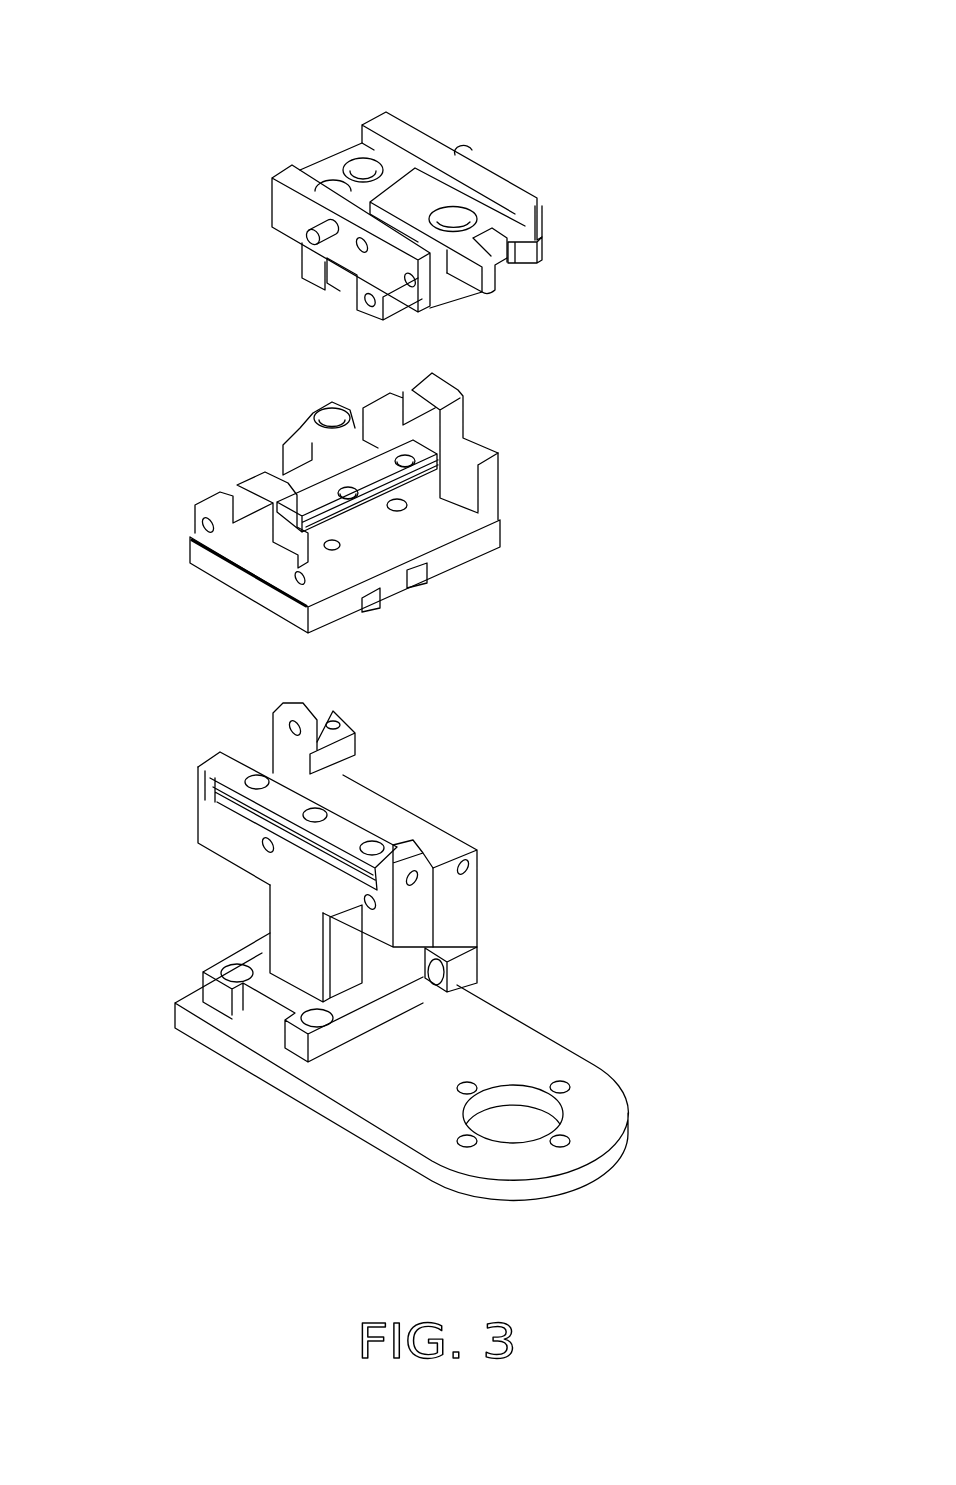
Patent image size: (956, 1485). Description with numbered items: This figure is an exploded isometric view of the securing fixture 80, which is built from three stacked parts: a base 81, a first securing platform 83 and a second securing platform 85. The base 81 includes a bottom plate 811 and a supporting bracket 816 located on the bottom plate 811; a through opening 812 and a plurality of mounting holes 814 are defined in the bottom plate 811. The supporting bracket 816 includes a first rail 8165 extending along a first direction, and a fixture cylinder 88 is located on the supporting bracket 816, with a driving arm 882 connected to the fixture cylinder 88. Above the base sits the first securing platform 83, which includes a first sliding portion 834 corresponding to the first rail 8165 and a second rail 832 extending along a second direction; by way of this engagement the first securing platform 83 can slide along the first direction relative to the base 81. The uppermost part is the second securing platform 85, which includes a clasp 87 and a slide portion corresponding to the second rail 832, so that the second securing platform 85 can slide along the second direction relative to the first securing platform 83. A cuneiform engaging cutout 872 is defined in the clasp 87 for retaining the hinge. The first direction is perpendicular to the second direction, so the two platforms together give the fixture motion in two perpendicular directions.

The securing fixture 80 is at (297, 78).
The second securing platform 85 is at (504, 323).
The clasp 87 is at (488, 217).
The cuneiform engaging cutout 872 is at (525, 255).
The first securing platform 83 is at (503, 557).
The second rail 832 is at (367, 483).
The first sliding portion 834 is at (413, 578).
The base 81 is at (508, 822).
The bottom plate 811 is at (520, 1050).
The through opening 812 is at (532, 1122).
The mounting holes 814 is at (463, 1143).
The supporting bracket 816 is at (298, 921).
The first rail 8165 is at (272, 793).
The fixture cylinder 88 is at (404, 822).
The driving arm 882 is at (345, 726).